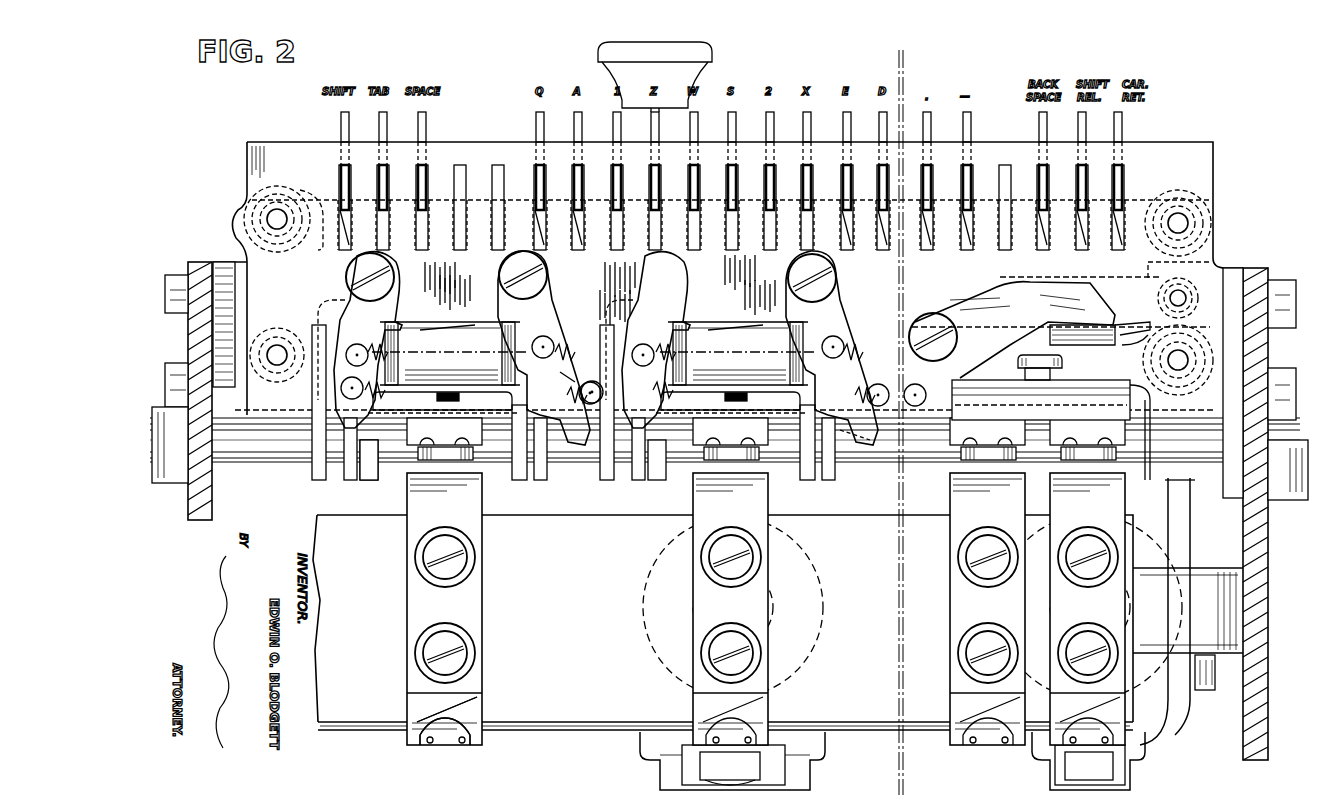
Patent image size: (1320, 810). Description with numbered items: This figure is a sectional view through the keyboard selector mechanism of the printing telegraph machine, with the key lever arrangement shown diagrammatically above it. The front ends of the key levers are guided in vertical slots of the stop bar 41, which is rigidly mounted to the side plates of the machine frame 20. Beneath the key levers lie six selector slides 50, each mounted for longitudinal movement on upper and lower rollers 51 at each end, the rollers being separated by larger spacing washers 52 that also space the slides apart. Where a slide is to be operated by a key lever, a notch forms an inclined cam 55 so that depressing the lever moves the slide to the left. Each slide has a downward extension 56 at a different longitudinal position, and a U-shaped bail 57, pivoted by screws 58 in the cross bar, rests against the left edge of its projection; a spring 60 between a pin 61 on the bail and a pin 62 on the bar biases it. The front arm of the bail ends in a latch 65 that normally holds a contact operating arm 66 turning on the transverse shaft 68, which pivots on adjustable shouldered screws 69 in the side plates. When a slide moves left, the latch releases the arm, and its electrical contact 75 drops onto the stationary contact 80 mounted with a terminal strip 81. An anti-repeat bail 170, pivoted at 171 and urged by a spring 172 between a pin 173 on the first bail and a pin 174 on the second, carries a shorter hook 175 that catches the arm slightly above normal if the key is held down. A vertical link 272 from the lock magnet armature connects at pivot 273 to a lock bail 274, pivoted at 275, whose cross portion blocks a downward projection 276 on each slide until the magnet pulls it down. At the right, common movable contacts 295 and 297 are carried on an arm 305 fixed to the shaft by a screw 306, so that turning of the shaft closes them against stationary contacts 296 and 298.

The machine frame side plate 20 is at (210, 480).
The stop bar 41 is at (1183, 160).
The selector slide 50 is at (322, 200).
The roller 51 is at (262, 193).
The spacing washer 52 is at (238, 218).
The inclined edge or cam 55 is at (1080, 225).
The extension 56 is at (425, 333).
The U-shaped bail 57 is at (395, 305).
The pivot screw 58 is at (390, 265).
The spring 60 is at (575, 380).
The pin 61 is at (345, 390).
The pin 62 is at (595, 390).
The hooked portion or latch 65 is at (375, 452).
The contact operating arm 66 is at (497, 412).
The transverse shaft 68 is at (287, 462).
The adjustable shouldered screw 69 is at (165, 400).
The electrical contact 75 is at (425, 440).
The stationary electrical contact 80 is at (482, 488).
The terminal strip 81 is at (482, 705).
The bail 170 is at (545, 330).
The pivot 171 is at (543, 268).
The spring 172 is at (465, 340).
The pin 173 is at (357, 350).
The pin 174 is at (548, 345).
The hook or catch portion 175 is at (864, 437).
The vertical link 272 is at (1190, 535).
The pivotal connection 273 is at (1165, 290).
The lock bail 274 is at (1090, 348).
The pivot 275 is at (930, 322).
The downward projection 276 is at (1135, 338).
The movable common contact 295 is at (975, 443).
The stationary contact 296 is at (990, 485).
The movable common contact 297 is at (1075, 443).
The stationary contact 298 is at (1090, 485).
The arm 305 is at (955, 385).
The screw 306 is at (1025, 358).